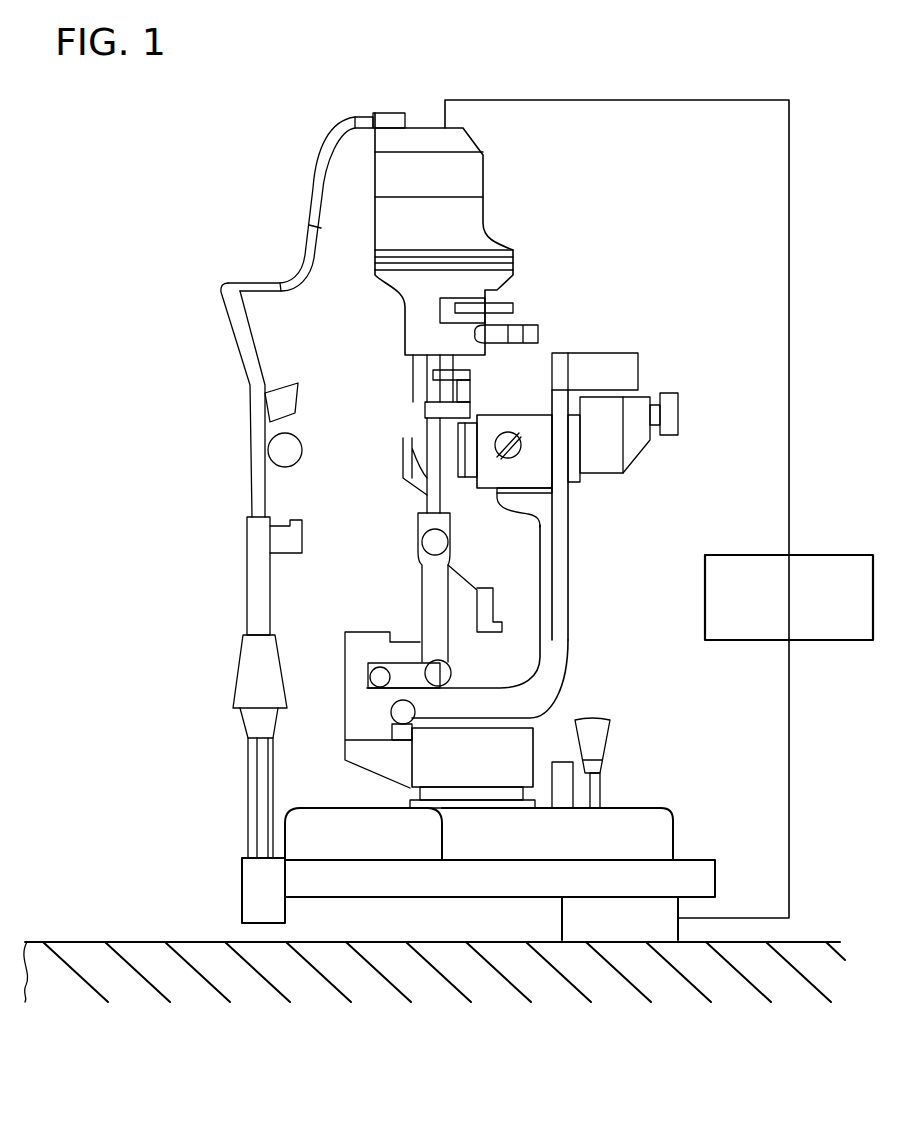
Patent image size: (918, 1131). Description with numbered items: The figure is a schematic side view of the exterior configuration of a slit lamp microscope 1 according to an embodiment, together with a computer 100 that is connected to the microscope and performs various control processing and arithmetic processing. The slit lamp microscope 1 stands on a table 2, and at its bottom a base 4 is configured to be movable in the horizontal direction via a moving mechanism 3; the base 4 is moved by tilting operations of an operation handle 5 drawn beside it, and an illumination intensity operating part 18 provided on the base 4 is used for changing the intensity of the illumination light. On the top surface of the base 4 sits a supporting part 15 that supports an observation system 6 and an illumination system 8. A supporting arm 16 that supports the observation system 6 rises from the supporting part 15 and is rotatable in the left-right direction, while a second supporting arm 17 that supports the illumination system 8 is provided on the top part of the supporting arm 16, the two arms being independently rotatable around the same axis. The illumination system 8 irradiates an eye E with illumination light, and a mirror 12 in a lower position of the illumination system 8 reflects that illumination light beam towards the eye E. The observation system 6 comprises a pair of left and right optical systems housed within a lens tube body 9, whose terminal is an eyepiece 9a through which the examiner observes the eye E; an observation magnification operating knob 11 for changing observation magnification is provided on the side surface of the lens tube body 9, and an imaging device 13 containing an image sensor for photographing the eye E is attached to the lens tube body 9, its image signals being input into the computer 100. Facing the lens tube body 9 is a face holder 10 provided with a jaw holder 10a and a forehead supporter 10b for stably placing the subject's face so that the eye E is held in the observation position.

The slit lamp microscope 1 is at (431, 526).
The table 2 is at (253, 990).
The moving mechanism 3 is at (308, 818).
The base 4 is at (655, 823).
The operation handle 5 is at (610, 740).
The observation system 6 is at (513, 400).
The illumination system 8 is at (392, 328).
The lens tube body 9 is at (610, 425).
The eyepiece 9a is at (668, 437).
The face holder 10 is at (236, 590).
The jaw holder 10a is at (282, 547).
The forehead supporter 10b is at (272, 410).
The observation magnification operating knob 11 is at (517, 458).
The mirror 12 is at (403, 465).
The imaging device 13 is at (617, 353).
The supporting part 15 is at (517, 740).
The supporting arm 16 is at (557, 630).
The supporting arm 17 is at (363, 655).
The illumination intensity operating part 18 is at (566, 790).
The computer 100 is at (832, 555).
The eye E is at (267, 450).